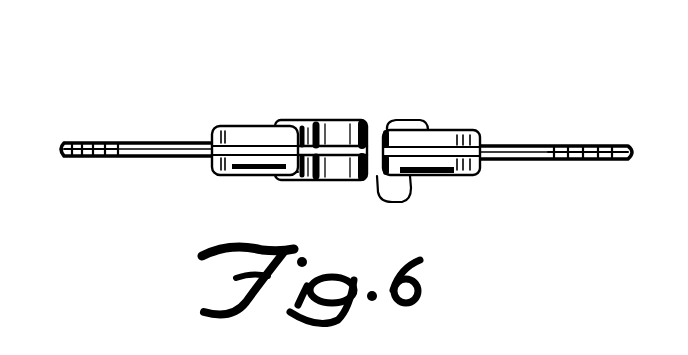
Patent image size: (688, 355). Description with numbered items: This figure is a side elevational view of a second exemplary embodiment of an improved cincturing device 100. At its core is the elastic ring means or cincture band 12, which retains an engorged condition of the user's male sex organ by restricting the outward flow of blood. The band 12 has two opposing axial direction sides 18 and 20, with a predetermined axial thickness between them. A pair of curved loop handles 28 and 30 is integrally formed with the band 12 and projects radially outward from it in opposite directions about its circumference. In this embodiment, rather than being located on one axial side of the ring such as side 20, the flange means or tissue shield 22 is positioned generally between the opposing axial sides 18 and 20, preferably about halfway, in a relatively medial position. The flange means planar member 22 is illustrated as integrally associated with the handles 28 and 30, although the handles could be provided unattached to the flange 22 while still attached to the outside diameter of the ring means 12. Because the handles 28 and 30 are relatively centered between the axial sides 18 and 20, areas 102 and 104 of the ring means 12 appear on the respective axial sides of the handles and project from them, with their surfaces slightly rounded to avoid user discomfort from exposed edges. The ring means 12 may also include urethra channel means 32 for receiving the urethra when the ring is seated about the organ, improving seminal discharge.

The improved cincturing device 100 is at (482, 60).
The flange means or tissue shield 22 is at (122, 141).
The curved loop handle 28 is at (482, 129).
The curved loop handle 30 is at (228, 127).
The elastic cincture band 12 is at (290, 118).
The axial direction side 18 is at (382, 120).
The area of ring means 102 is at (410, 120).
The area of ring means 104 is at (414, 184).
The axial direction side 20 is at (380, 181).
The urethra channel means 32 is at (326, 200).